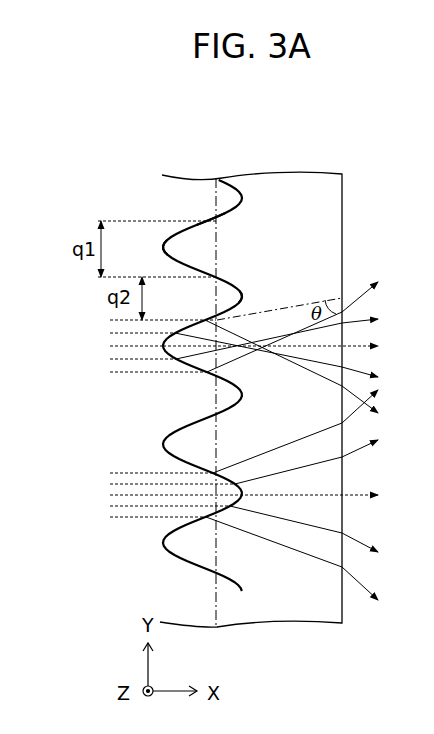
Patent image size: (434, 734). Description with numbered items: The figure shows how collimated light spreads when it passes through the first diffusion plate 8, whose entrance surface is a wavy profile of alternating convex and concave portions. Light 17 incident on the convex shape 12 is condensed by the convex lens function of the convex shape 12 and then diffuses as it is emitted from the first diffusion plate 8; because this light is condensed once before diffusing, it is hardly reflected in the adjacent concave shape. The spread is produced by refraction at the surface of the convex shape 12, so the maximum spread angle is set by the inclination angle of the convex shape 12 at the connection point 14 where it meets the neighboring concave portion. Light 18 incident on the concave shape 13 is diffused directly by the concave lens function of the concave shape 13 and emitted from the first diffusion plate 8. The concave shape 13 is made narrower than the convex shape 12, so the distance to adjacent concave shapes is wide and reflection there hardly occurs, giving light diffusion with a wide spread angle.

The first diffusion plate 8 is at (290, 188).
The convex shape 12 is at (163, 247).
The concave shape 13 is at (242, 296).
The connection point 14 is at (216, 221).
The light incident on convex shape 17 is at (104, 320).
The light incident on concave shape 18 is at (104, 473).